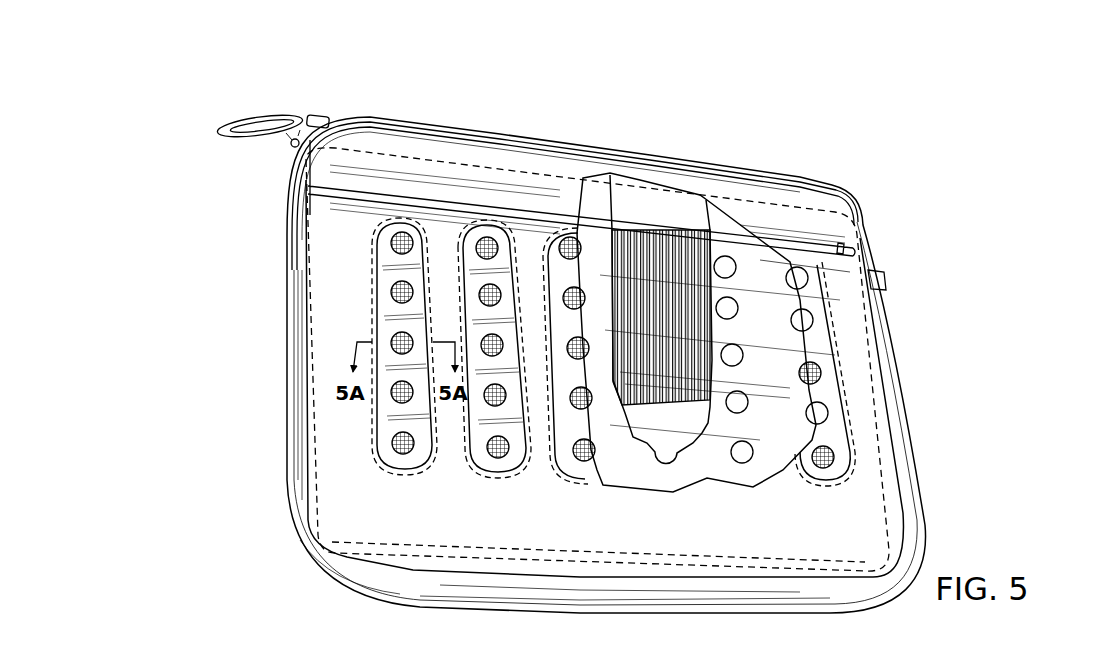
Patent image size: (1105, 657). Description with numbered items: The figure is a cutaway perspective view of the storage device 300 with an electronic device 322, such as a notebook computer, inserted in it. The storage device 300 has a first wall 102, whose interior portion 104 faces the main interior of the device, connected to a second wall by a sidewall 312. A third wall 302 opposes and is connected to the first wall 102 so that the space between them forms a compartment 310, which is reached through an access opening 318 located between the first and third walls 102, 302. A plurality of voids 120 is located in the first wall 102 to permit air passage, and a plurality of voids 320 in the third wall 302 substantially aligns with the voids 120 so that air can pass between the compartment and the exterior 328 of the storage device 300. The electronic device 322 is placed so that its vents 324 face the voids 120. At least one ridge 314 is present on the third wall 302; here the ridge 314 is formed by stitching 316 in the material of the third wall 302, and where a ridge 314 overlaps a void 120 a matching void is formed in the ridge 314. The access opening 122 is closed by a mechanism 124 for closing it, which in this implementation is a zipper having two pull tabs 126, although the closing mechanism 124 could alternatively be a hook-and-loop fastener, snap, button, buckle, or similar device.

The first wall 102 is at (807, 198).
The interior portion of the first wall 104 is at (847, 195).
The voids 120 is at (730, 297).
The access opening 122 is at (353, 114).
The mechanism for closing the access opening 124 is at (315, 117).
The pull tabs 126 is at (222, 124).
The storage device 300 is at (913, 305).
The third wall 302 is at (863, 273).
The compartment 310 is at (333, 268).
The sidewall 312 is at (335, 570).
The ridge 314 is at (385, 407).
The stitching 316 is at (377, 438).
The access opening 318 is at (354, 194).
The voids 320 is at (484, 236).
The electronic device 322 is at (773, 200).
The vents 324 is at (663, 232).
The exterior of the storage device 328 is at (857, 362).